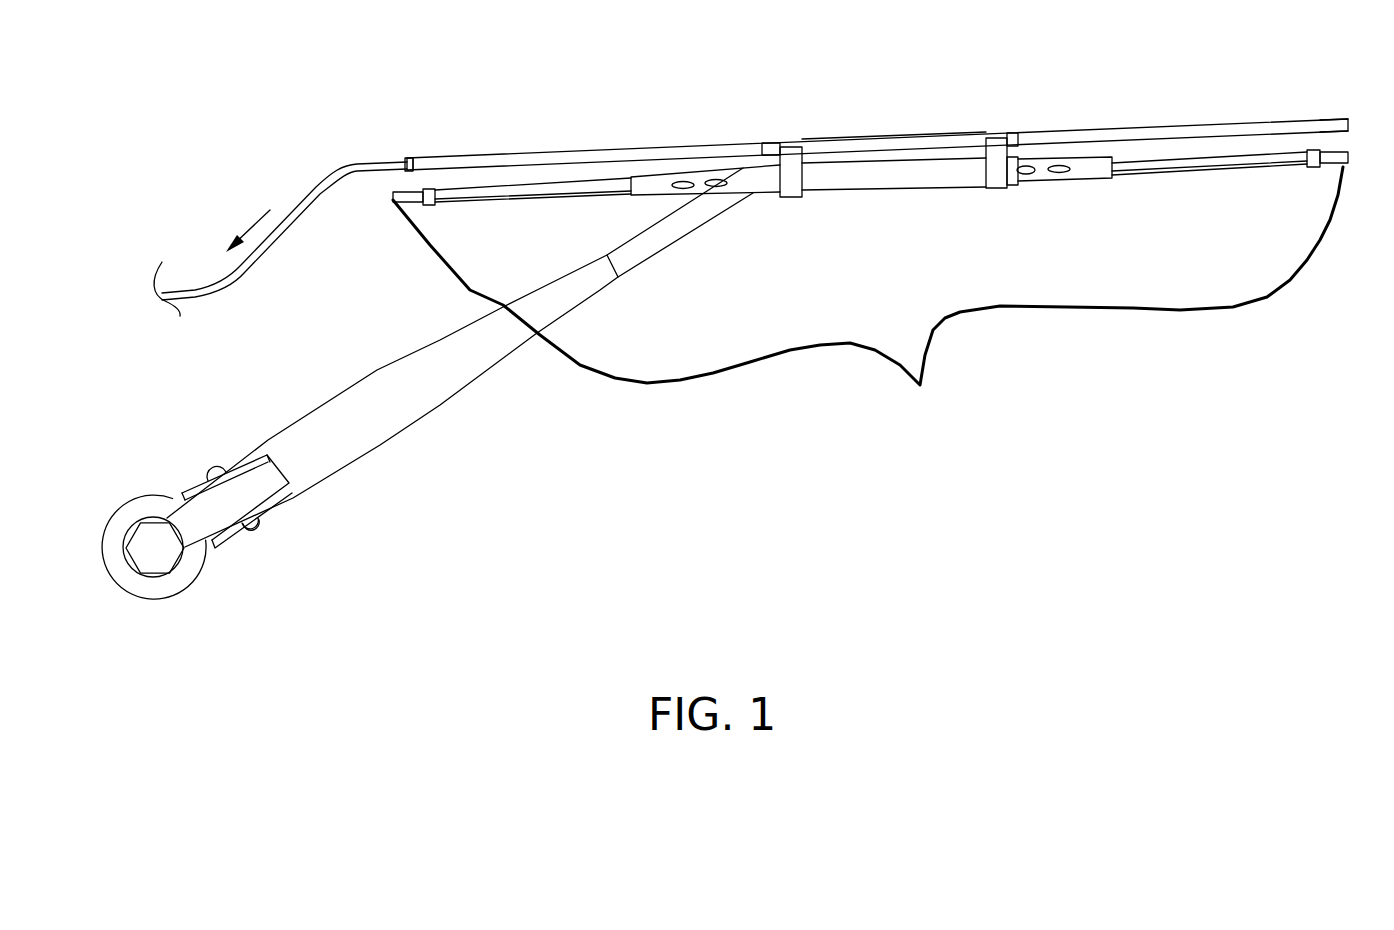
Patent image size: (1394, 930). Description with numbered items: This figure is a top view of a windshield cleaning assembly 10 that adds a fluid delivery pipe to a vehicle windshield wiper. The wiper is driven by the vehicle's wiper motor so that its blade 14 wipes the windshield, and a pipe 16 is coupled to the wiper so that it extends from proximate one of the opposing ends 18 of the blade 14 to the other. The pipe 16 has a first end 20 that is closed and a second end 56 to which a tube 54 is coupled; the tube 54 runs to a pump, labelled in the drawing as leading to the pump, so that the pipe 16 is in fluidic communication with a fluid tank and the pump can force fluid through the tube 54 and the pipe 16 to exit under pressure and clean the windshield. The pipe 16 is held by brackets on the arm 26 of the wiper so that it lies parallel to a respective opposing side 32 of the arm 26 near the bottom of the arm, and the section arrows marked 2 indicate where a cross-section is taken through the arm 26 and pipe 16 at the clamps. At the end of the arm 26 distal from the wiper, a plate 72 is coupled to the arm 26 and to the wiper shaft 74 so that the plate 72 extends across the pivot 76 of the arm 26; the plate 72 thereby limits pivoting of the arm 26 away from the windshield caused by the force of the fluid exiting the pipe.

The windshield cleaning assembly 10 is at (1000, 490).
The blade 14 is at (1148, 165).
The pipe 16 is at (702, 152).
The opposing ends 18 is at (868, 302).
The first end 20 is at (1350, 117).
The arm 26 is at (828, 180).
The opposing side 32 is at (990, 165).
The section line 2- 2 is at (954, 172).
The tube 54 is at (318, 188).
The second end 56 is at (407, 157).
The plate 72 is at (213, 505).
The wiper shaft 74 is at (145, 558).
The pivot 76 is at (253, 532).